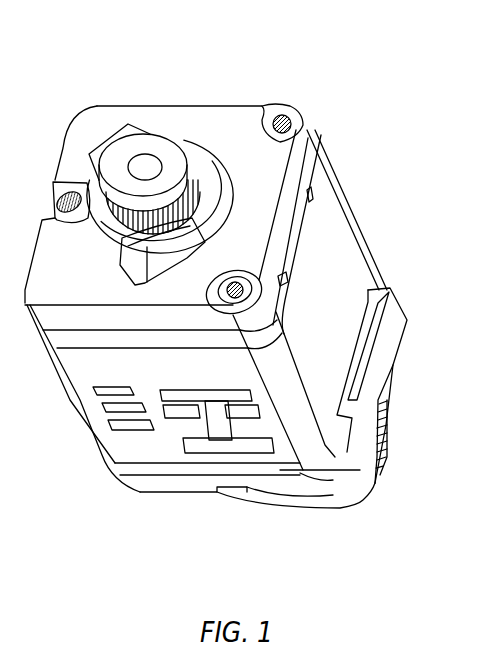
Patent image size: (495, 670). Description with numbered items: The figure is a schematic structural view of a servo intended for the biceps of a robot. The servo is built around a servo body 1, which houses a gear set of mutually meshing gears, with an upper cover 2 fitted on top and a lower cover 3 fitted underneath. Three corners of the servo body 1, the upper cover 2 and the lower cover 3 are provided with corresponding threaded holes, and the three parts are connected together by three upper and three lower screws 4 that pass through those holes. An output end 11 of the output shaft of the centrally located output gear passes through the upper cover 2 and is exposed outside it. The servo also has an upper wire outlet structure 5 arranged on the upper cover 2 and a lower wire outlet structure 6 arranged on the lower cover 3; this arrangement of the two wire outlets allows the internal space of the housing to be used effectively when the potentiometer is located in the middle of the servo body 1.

The servo body 1 is at (338, 240).
The upper cover 2 is at (240, 142).
The lower cover 3 is at (197, 463).
The screws 4 is at (280, 116).
The upper wire outlet structure 5 is at (207, 205).
The lower wire outlet structure 6 is at (246, 490).
The output end 11 is at (166, 165).